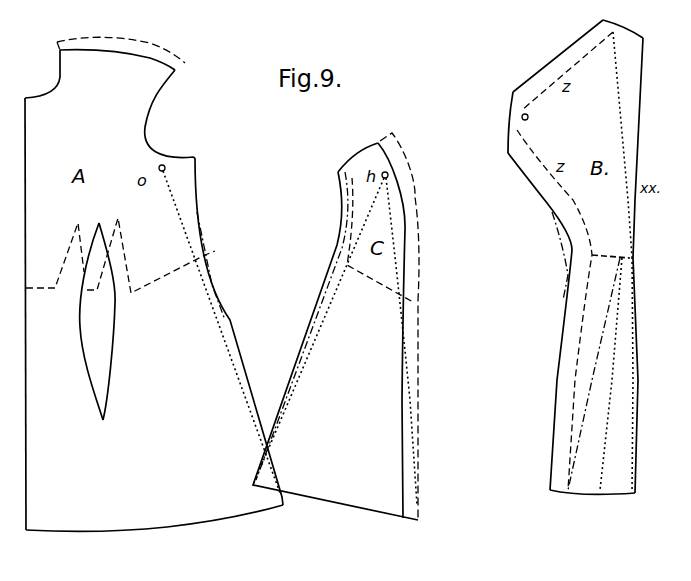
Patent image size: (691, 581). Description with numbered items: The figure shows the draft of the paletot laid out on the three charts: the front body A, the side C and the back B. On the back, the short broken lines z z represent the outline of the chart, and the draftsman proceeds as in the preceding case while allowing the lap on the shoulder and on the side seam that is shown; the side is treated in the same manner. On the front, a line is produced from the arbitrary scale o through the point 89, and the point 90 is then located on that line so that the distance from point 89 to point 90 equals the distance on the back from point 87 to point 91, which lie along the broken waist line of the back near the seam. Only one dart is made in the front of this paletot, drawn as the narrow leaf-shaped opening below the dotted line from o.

The point 87 is at (618, 257).
The point 89 is at (203, 256).
The point 90 is at (208, 247).
The point 91 is at (637, 260).